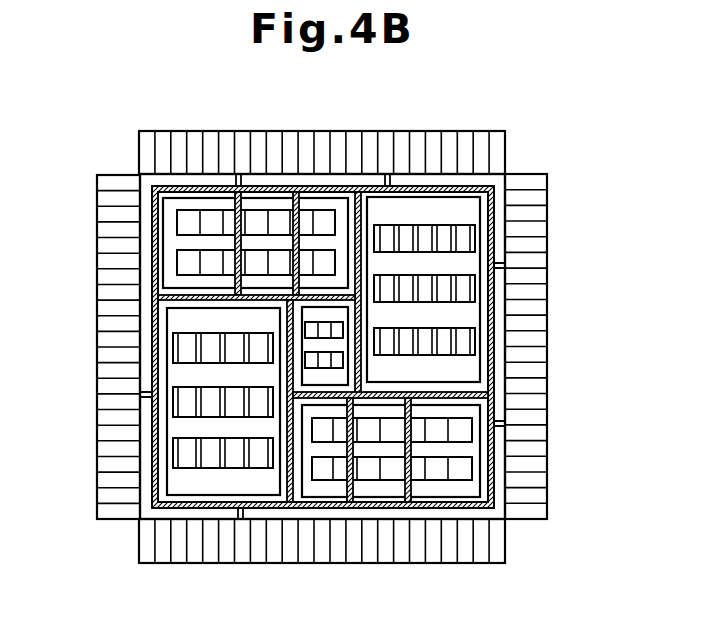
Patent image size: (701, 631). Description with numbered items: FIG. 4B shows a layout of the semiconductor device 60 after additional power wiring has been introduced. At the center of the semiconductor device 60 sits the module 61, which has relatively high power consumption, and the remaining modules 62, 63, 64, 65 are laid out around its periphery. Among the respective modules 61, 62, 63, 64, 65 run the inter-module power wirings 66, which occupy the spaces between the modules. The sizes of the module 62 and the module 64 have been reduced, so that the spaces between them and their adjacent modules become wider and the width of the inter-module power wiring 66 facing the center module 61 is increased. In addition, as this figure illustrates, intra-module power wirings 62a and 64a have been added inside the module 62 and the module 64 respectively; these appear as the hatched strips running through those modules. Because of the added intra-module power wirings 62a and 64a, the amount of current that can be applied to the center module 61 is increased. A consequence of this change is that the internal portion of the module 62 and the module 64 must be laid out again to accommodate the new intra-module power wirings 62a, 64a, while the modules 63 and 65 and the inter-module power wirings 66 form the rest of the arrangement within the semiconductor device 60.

The semiconductor device 60 is at (495, 131).
The module 61 is at (320, 375).
The module 62 is at (193, 206).
The intra-module power wiring 62a is at (292, 238).
The module 63 is at (173, 428).
The module 64 is at (460, 487).
The intra-module power wiring 64a is at (408, 450).
The module 65 is at (465, 317).
The inter-module power wiring 66 is at (477, 186).